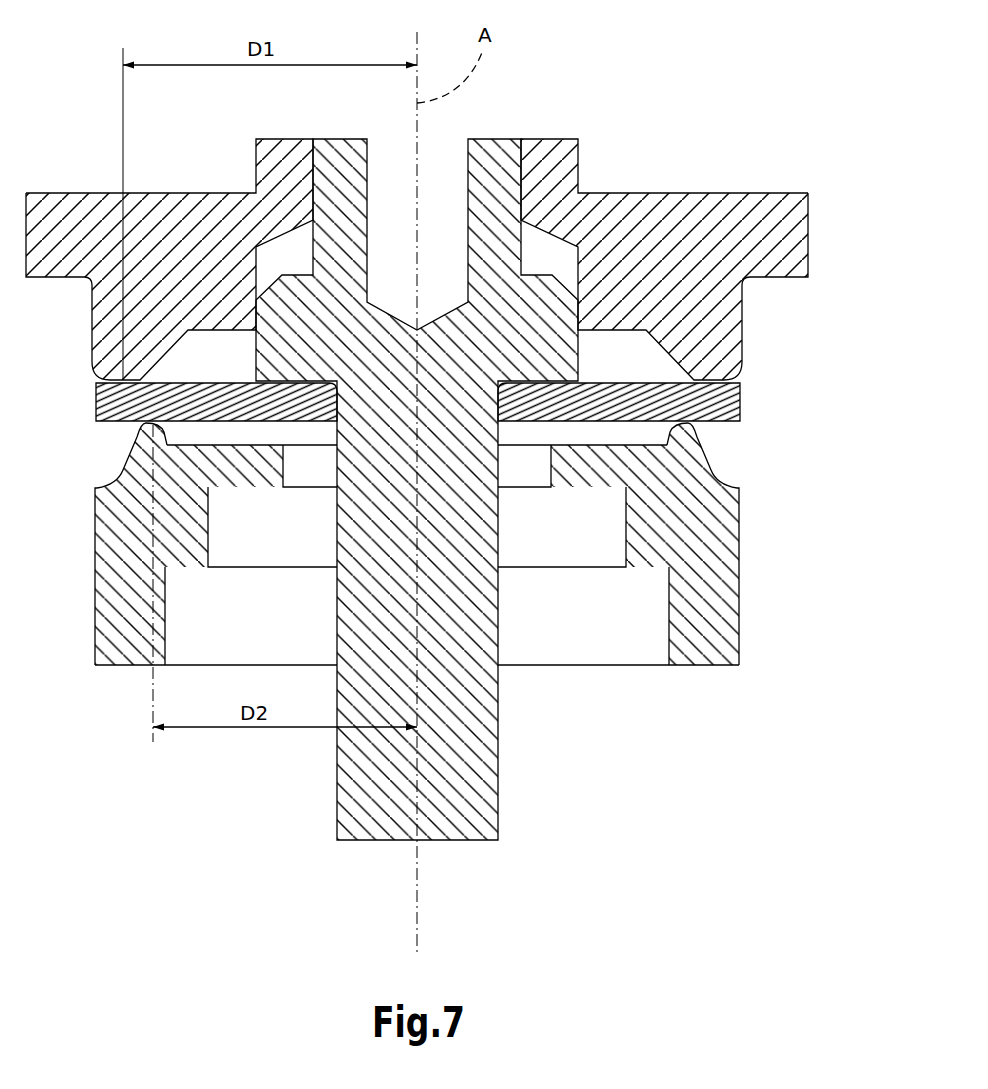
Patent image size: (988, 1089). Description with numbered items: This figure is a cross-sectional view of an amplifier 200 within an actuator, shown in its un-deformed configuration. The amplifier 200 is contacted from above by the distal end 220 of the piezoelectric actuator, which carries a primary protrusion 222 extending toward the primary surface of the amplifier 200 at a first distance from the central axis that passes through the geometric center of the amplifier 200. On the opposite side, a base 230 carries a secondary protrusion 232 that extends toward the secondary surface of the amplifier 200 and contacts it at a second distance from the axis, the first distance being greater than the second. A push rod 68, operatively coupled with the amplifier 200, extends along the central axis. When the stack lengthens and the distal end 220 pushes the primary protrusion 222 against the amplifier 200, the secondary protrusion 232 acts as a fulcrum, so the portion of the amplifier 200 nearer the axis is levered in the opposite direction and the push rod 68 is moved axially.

The push rod 68 is at (460, 786).
The amplifier 200 is at (717, 403).
The distal end 220 is at (793, 237).
The primary protrusion 222 is at (735, 356).
The base 230 is at (715, 628).
The secondary protrusion 232 is at (680, 435).